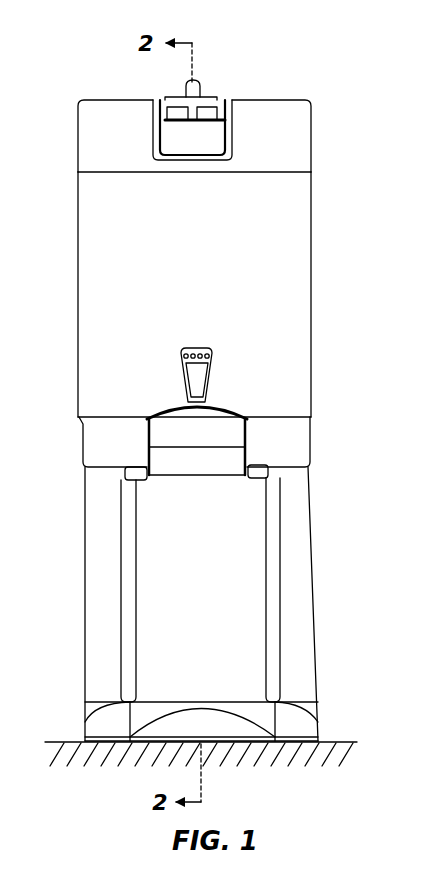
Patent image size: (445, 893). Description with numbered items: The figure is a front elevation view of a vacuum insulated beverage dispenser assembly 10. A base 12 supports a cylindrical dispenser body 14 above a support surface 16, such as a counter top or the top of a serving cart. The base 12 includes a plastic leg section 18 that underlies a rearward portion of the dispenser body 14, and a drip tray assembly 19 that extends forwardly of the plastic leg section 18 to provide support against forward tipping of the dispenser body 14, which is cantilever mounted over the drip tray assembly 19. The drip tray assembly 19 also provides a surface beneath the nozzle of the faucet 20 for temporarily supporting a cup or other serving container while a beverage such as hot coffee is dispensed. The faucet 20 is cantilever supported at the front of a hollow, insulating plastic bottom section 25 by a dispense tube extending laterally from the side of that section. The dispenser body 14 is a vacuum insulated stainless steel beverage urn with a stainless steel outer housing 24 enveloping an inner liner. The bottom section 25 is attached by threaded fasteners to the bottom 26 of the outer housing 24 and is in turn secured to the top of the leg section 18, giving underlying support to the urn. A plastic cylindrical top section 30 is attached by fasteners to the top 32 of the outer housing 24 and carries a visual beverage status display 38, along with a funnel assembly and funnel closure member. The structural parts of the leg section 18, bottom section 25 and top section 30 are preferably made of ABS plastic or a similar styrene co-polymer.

The vacuum insulated beverage dispenser assembly 10 is at (323, 57).
The base 12 is at (298, 646).
The cylindrical dispenser body 14 is at (313, 282).
The support surface 16 is at (340, 742).
The plastic leg section 18 is at (102, 618).
The drip tray assembly 19 is at (262, 720).
The faucet 20 is at (182, 383).
The outer housing 24 is at (97, 282).
The bottom section 25 is at (302, 443).
The bottom of the outer housing 26 is at (90, 421).
The top section 30 is at (93, 155).
The top of the outer housing 32 is at (309, 172).
The visual beverage status display 38 is at (216, 134).